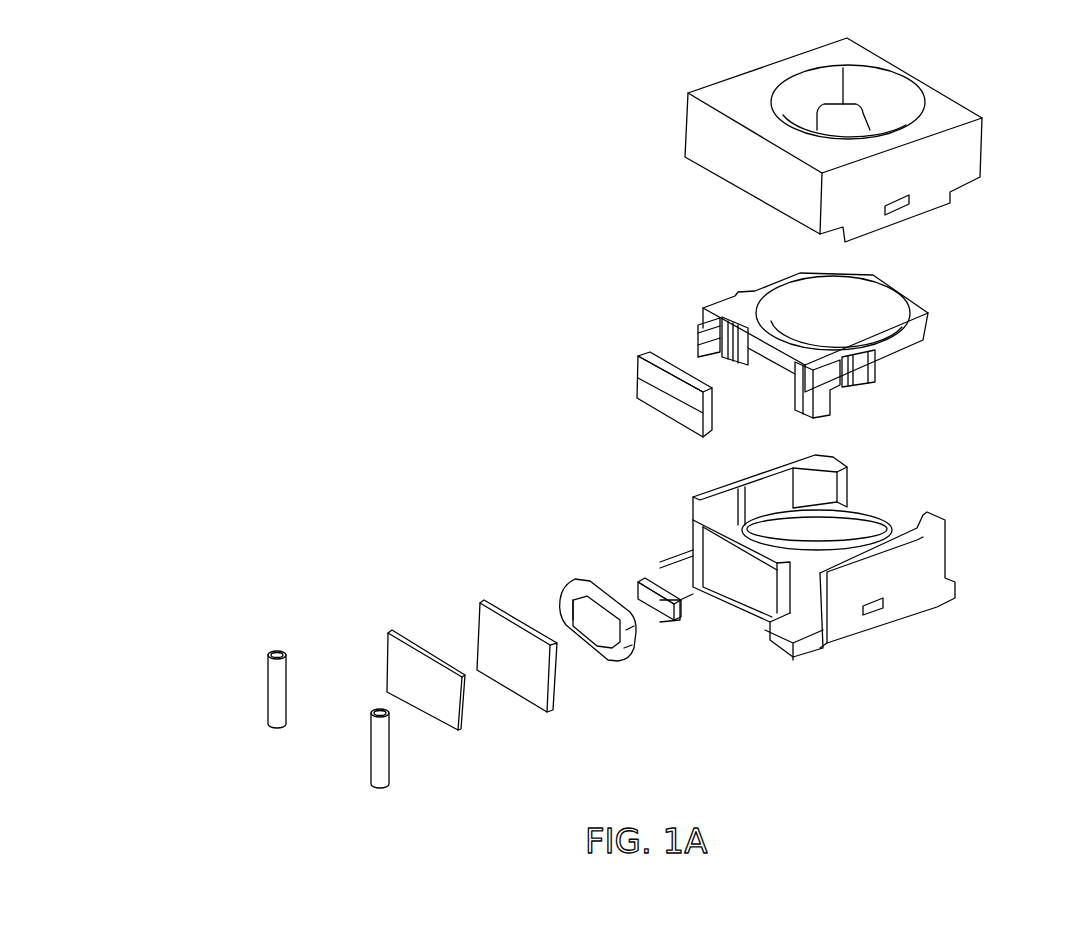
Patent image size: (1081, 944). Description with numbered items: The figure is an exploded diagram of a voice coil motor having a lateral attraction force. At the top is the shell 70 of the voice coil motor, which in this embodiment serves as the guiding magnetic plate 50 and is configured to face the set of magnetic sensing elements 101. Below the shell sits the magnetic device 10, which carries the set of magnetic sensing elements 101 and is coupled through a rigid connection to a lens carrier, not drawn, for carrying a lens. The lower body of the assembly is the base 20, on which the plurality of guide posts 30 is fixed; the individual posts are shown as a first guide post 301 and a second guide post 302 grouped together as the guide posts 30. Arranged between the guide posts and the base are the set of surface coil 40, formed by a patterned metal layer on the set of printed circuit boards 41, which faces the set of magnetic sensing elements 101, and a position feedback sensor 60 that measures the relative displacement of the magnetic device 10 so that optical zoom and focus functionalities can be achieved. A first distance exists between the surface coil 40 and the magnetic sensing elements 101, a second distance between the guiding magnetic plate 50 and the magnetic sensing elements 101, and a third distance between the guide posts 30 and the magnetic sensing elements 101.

The shell 70 is at (940, 168).
The magnetic device 10 is at (902, 353).
The base 20 is at (900, 593).
The magnetic sensing elements 101 is at (633, 365).
The position feedback sensor 60 is at (633, 583).
The surface coil 40 is at (562, 593).
The printed circuit boards 41 is at (487, 633).
The guiding magnetic plate 50 is at (387, 660).
The guide posts 30 is at (138, 730).
The first guide pin 301 is at (268, 688).
The second guide pin 302 is at (370, 750).